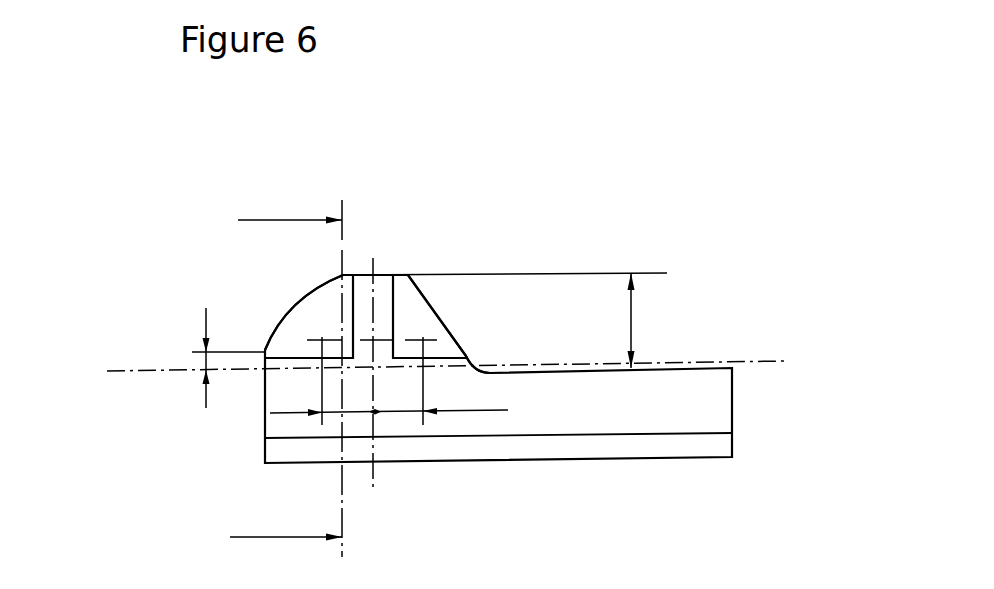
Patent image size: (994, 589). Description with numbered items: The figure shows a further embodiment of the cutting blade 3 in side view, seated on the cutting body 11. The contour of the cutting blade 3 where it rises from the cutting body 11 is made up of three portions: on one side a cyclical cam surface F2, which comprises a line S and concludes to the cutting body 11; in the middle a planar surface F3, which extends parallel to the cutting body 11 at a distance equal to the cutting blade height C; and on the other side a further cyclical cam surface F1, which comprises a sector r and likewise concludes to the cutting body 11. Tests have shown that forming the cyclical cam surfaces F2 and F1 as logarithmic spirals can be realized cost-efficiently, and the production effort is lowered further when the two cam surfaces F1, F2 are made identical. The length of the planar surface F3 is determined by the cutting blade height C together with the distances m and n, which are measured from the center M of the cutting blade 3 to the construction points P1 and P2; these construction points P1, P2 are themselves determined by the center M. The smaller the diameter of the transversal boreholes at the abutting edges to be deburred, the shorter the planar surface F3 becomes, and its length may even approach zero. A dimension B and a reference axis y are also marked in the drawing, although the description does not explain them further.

The cutting blade 3 is at (295, 323).
The cutting body 11 is at (270, 430).
The further cyclical cam surface F1 is at (462, 280).
The cyclical cam surface F2 is at (305, 308).
The planar surface F3 is at (408, 273).
The construction point P1 is at (420, 363).
The construction point P2 is at (322, 365).
The center of the cutting blade M is at (376, 375).
The width dimension B is at (286, 360).
The cutting blade height C is at (647, 320).
The line S is at (221, 358).
The distance m is at (325, 396).
The distance n is at (441, 396).
The sector r is at (478, 366).
The axis y- y is at (428, 366).